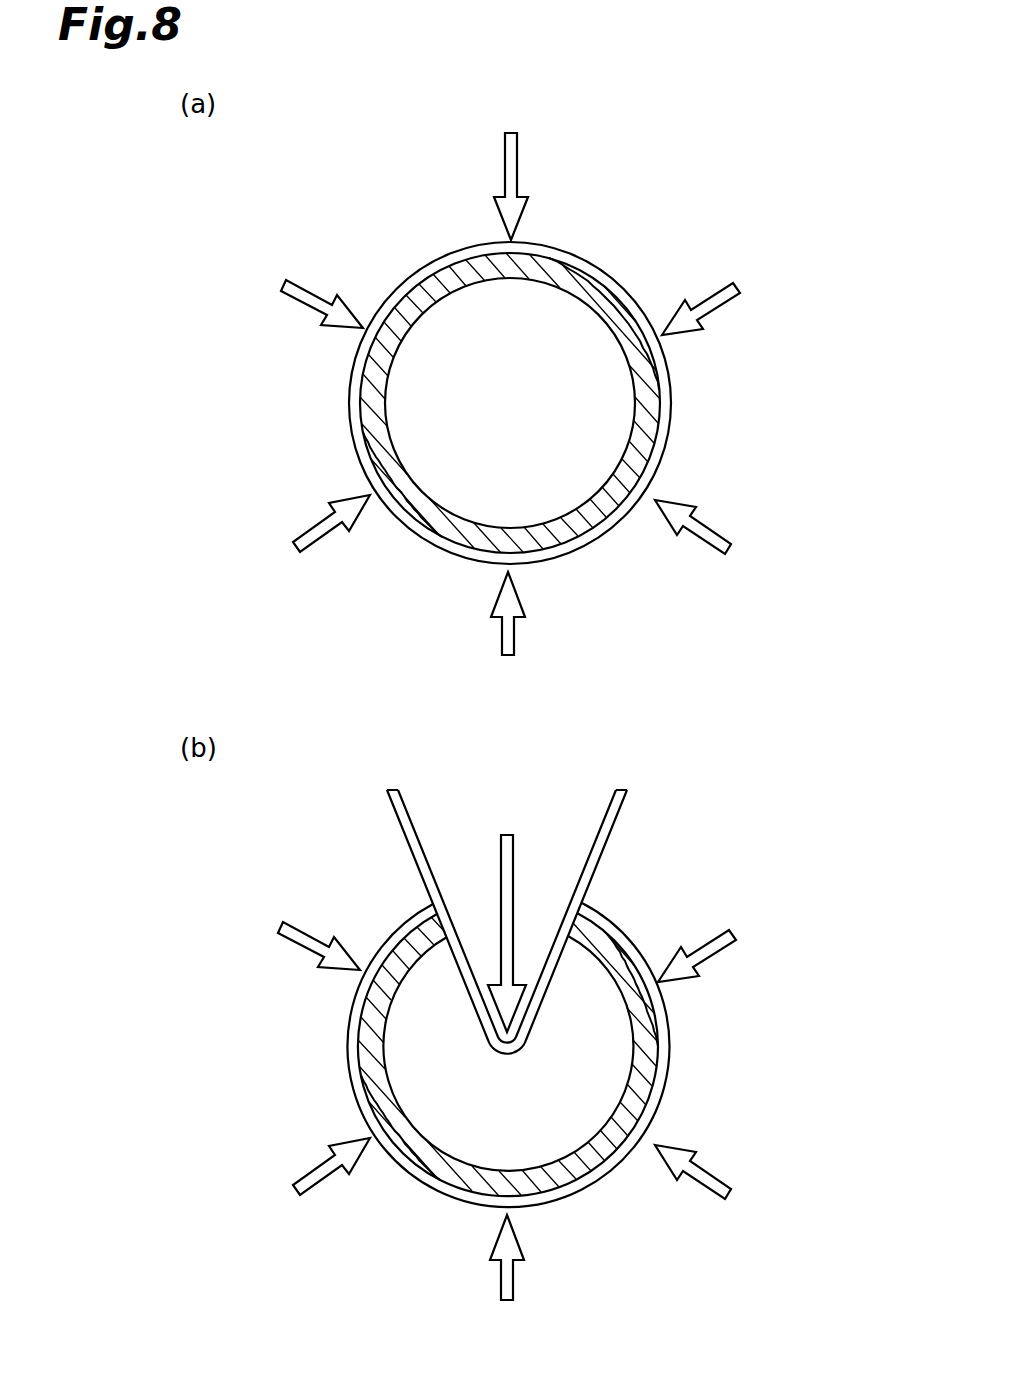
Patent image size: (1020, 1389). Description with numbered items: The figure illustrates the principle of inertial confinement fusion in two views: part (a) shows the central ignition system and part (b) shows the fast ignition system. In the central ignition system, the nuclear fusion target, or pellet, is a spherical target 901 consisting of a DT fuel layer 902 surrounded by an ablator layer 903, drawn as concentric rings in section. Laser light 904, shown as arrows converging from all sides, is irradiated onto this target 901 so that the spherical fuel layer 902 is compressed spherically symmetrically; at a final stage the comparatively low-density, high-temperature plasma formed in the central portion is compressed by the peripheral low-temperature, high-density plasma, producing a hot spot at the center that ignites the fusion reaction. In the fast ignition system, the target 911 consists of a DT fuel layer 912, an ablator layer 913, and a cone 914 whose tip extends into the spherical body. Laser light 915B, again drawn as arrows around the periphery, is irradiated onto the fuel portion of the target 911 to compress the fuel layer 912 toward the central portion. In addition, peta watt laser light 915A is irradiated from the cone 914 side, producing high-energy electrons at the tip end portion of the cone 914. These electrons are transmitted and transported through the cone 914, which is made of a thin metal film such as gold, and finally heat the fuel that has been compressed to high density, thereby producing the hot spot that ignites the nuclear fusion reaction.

The spherical target 901 is at (547, 356).
The DT fuel layer 902 is at (647, 368).
The ablator layer 903 is at (665, 430).
The laser light 904 is at (716, 292).
In FIG. 8b, the target 911 is at (530, 1021).
In FIG. 8b, the DT fuel layer 912 is at (642, 1013).
In FIG. 8b, the ablator layer 913 is at (660, 1077).
In FIG. 8b, the cone 914 is at (388, 812).
In FIG. 8b, the peta watt laser light 915A is at (514, 848).
In FIG. 8b, the laser light 915B is at (715, 937).